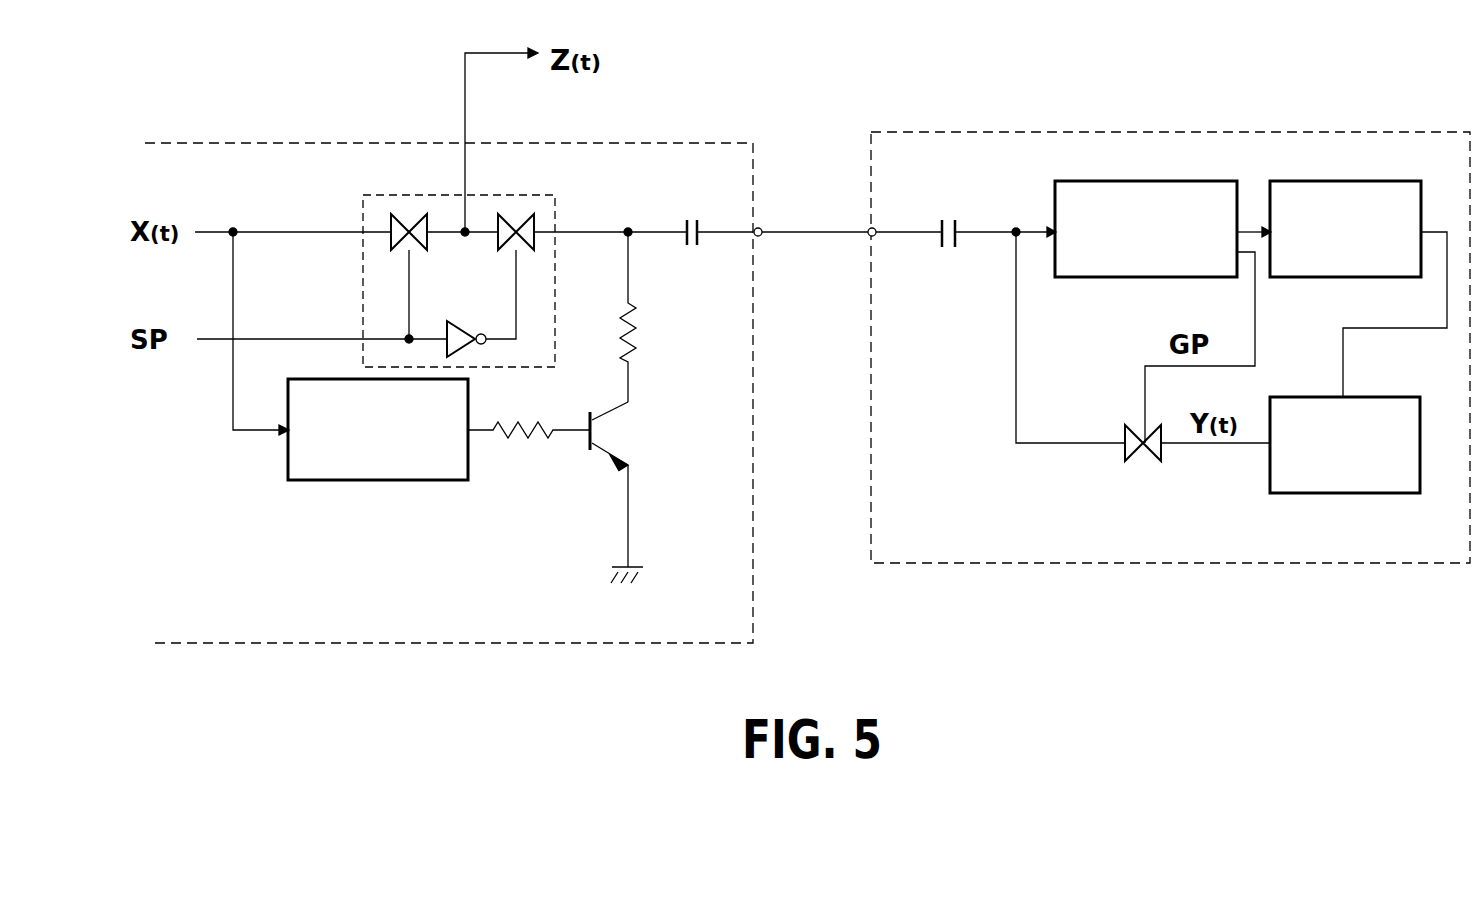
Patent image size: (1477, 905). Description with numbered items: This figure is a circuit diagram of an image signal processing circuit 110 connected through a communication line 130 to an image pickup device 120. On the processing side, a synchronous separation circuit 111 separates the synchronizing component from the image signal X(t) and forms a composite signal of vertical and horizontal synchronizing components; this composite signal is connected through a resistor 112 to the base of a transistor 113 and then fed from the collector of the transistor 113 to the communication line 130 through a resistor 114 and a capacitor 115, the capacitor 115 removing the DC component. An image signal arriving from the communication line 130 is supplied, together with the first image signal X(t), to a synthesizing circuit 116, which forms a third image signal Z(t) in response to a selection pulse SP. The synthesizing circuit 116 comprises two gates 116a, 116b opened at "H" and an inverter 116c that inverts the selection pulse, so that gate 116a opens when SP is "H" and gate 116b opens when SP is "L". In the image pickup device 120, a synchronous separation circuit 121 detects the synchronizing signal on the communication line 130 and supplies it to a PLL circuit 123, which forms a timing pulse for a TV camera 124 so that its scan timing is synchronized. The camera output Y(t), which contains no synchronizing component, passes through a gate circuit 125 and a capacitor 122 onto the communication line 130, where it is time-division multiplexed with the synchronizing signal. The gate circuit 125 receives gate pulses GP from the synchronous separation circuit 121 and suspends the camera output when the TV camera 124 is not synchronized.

The image signal processing circuit 110 is at (694, 152).
The synchronous separation circuit 111 is at (393, 481).
The resistor 112 is at (527, 438).
The transistor 113 is at (622, 437).
The resistor 114 is at (640, 335).
The capacitor 115 is at (692, 248).
The synthesizing circuit 116 is at (397, 193).
The gate 116a is at (388, 250).
The gate 116b is at (523, 245).
The inverter 116c is at (470, 347).
The image pickup device 120 is at (1068, 128).
The synchronous separation circuit 121 is at (1078, 279).
The capacitor 122 is at (944, 250).
The PLL circuit 123 is at (1377, 189).
The TV camera 124 is at (1268, 476).
The gate circuit 125 is at (1134, 460).
The communication line 130 is at (803, 228).